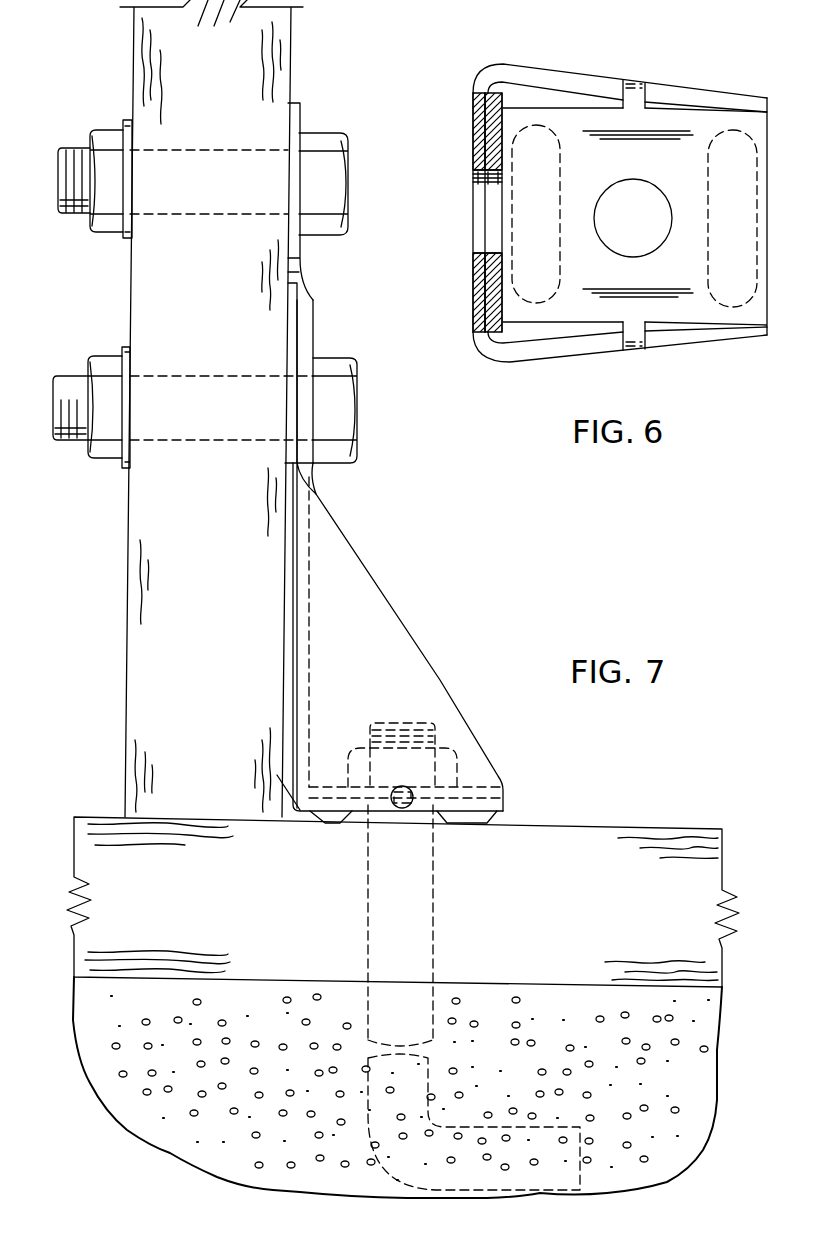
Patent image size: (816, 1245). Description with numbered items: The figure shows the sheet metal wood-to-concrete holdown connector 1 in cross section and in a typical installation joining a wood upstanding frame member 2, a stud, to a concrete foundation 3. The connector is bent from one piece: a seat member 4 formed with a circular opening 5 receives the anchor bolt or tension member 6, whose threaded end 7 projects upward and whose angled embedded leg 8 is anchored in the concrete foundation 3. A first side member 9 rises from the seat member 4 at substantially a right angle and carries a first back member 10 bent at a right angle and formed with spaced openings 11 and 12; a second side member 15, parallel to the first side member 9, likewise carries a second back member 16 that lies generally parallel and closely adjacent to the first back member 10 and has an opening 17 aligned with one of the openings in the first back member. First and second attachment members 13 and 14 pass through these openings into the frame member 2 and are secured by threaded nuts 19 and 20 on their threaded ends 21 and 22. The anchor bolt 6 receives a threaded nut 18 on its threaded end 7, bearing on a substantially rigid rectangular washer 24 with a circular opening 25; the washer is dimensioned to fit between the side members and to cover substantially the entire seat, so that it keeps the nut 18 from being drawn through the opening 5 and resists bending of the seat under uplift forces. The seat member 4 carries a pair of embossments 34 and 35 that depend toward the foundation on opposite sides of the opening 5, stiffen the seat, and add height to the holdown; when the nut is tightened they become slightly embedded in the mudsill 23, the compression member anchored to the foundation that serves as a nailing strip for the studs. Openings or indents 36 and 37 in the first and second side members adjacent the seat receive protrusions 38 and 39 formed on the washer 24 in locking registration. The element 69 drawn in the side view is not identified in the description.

In FIG. 7, the holdown connector 1 is at (310, 118).
In FIG. 7, the wood upstanding frame member 2 is at (291, 34).
In FIG. 7, the concrete foundation 3 is at (708, 1028).
In FIG. 7, the seat member 4 is at (443, 815).
In FIG. 7, the opening in seat member 5 is at (380, 808).
In FIG. 7, the anchor bolt 6 is at (436, 910).
In FIG. 7, the threaded end of anchor bolt 7 is at (437, 732).
In FIG. 7, the angled embedded leg 8 is at (478, 1127).
In FIG. 7, the first side member 9 is at (358, 666).
In FIG. 6, the first side member 9 is at (706, 335).
In FIG. 7, the first back member 10 is at (316, 313).
In FIG. 6, the first back member 10 is at (507, 119).
In FIG. 7, the opening in first back member 11 is at (297, 394).
In FIG. 6, the opening in first back member 11 is at (488, 180).
In FIG. 7, the opening in first back member 12 is at (296, 151).
In FIG. 7, the first attachment member 13 is at (56, 442).
In FIG. 7, the second attachment member 14 is at (58, 208).
In FIG. 6, the second side member 15 is at (682, 87).
In FIG. 7, the second back member 16 is at (284, 348).
In FIG. 6, the second back member 16 is at (469, 285).
In FIG. 7, the opening in second back member 17 is at (305, 383).
In FIG. 6, the opening in second back member 17 is at (470, 178).
In FIG. 7, the threaded nut 18 is at (457, 765).
In FIG. 7, the threaded nut 19 is at (108, 356).
In FIG. 7, the threaded nut 20 is at (110, 130).
In FIG. 7, the threaded end 21 is at (78, 376).
In FIG. 7, the threaded end 22 is at (72, 148).
In FIG. 7, the mudsill 23 is at (678, 828).
In FIG. 7, the rectangular washer 24 is at (331, 784).
In FIG. 6, the rectangular washer 24 is at (697, 108).
In FIG. 6, the circular opening in washer 25 is at (640, 188).
In FIG. 7, the embossment 34 is at (467, 823).
In FIG. 6, the embossment 34 is at (705, 255).
In FIG. 7, the embossment 35 is at (325, 818).
In FIG. 6, the embossment 35 is at (563, 178).
In FIG. 7, the opening or indent in first side member 36 is at (397, 806).
In FIG. 6, the opening or indent in first side member 36 is at (630, 347).
In FIG. 6, the opening or indent in second side member 37 is at (641, 84).
In FIG. 7, the washer protrusion 38 is at (402, 786).
In FIG. 6, the washer protrusion 38 is at (618, 334).
In FIG. 6, the washer protrusion 39 is at (621, 100).
In FIG. 7, the gusset 69 is at (412, 642).